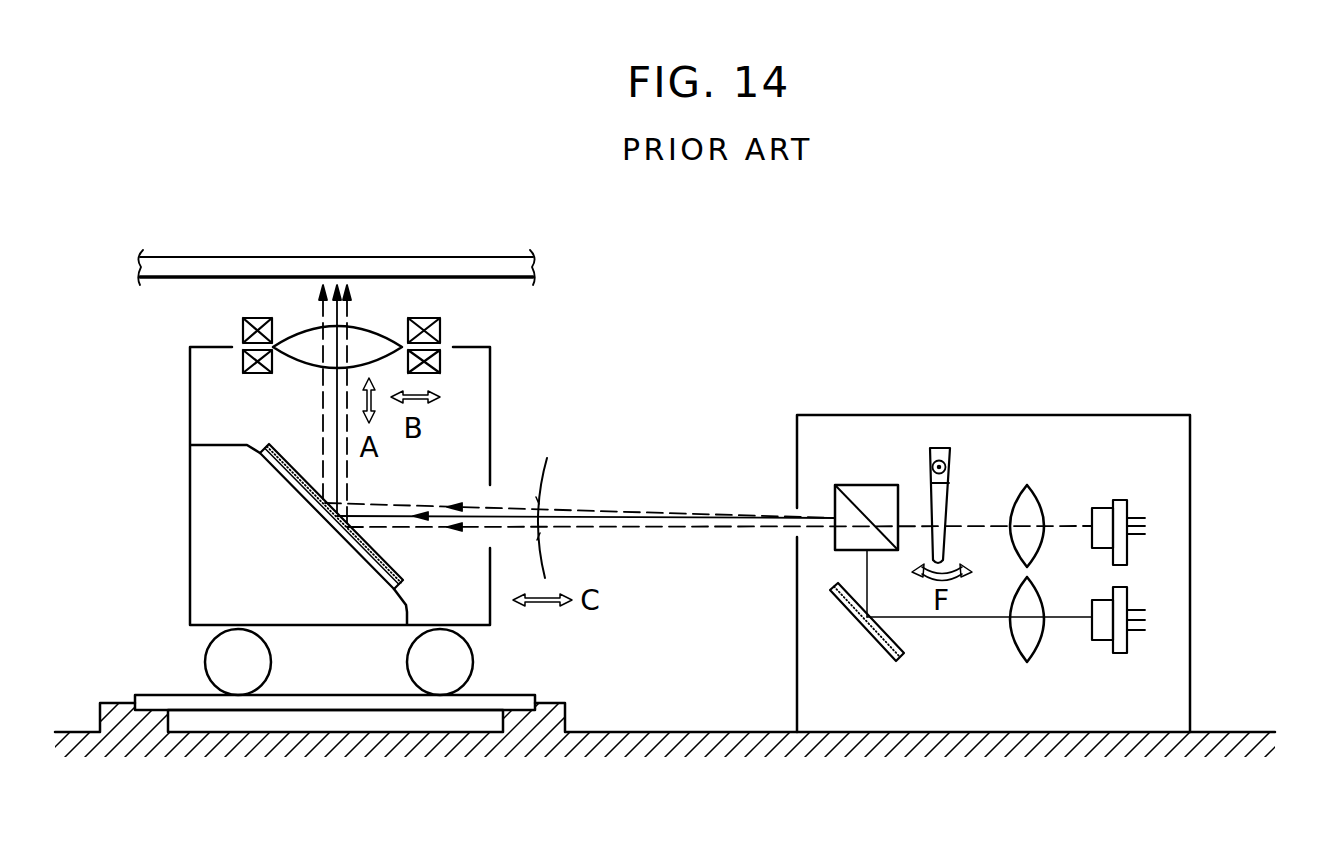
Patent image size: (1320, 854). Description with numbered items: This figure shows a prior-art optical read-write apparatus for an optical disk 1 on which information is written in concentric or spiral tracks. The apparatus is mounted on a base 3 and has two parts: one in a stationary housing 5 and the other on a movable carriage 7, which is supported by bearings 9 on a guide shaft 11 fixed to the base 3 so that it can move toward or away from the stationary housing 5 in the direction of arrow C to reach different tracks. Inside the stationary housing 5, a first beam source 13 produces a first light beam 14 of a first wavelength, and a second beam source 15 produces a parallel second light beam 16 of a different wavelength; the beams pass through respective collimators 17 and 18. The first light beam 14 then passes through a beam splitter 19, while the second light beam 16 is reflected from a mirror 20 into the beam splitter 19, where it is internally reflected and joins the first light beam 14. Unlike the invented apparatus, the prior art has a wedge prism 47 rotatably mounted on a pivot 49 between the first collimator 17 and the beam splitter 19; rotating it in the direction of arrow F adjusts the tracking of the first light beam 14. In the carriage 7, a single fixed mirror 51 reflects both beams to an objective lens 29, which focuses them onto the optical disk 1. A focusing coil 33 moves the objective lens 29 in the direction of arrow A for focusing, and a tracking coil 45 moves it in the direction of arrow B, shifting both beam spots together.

The optical disk 1 is at (500, 257).
The base 3 is at (1250, 732).
The stationary housing 5 is at (1148, 415).
The movable carriage 7 is at (190, 425).
The bearings 9 is at (200, 660).
The guide shaft 11 is at (148, 692).
The first beam source 13 is at (1127, 505).
The first light beam 14 is at (613, 512).
The second beam source 15 is at (1127, 592).
The second light beam 16 is at (562, 513).
The first collimator 17 is at (1037, 495).
The second collimator 18 is at (1037, 655).
The beam splitter 19 is at (857, 485).
The mirror 20 is at (843, 608).
The objective lens 29 is at (373, 328).
The focusing coil 33 is at (243, 328).
The tracking coil 45 is at (243, 362).
The wedge prism 47 is at (950, 500).
The pivot 49 is at (941, 448).
The fixed mirror 51 is at (278, 475).